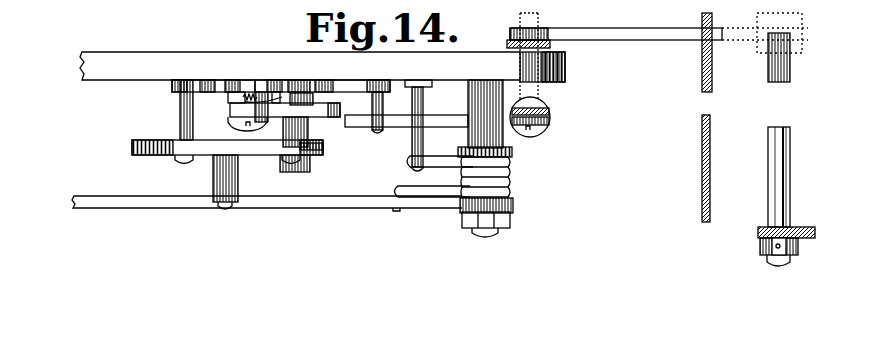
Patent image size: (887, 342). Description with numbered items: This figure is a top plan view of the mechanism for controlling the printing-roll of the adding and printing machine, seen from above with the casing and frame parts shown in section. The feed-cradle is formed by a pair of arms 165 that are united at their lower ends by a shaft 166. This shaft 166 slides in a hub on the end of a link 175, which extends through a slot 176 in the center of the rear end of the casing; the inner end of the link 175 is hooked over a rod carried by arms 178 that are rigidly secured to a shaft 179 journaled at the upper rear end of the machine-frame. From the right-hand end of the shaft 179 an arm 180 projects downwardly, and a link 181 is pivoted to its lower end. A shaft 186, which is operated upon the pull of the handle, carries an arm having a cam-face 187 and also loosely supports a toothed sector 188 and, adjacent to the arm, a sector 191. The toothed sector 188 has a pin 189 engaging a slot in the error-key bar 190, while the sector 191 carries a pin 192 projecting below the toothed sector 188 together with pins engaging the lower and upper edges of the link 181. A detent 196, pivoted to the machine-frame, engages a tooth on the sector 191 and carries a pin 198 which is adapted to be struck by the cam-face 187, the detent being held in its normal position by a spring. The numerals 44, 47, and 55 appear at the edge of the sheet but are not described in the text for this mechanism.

The part 44 is at (243, 12).
The part 47 is at (60, 11).
The bracket (dotted outline) 55 is at (498, 26).
The arms 165 is at (807, 235).
The shaft 166 is at (782, 177).
The link 175 is at (657, 40).
The slot 176 is at (702, 75).
The arms 178 is at (516, 47).
The shaft 179 is at (535, 90).
The arm 180 is at (546, 123).
The link 181 is at (447, 124).
The shaft 186 is at (310, 164).
The cam-face 187 is at (335, 109).
The toothed sector 188 is at (210, 152).
The pin 189 is at (238, 180).
The error-key bar 190 is at (308, 207).
The sector 191 is at (323, 62).
The pin 192 is at (180, 116).
The detent 196 is at (251, 88).
The pin 198 is at (263, 92).